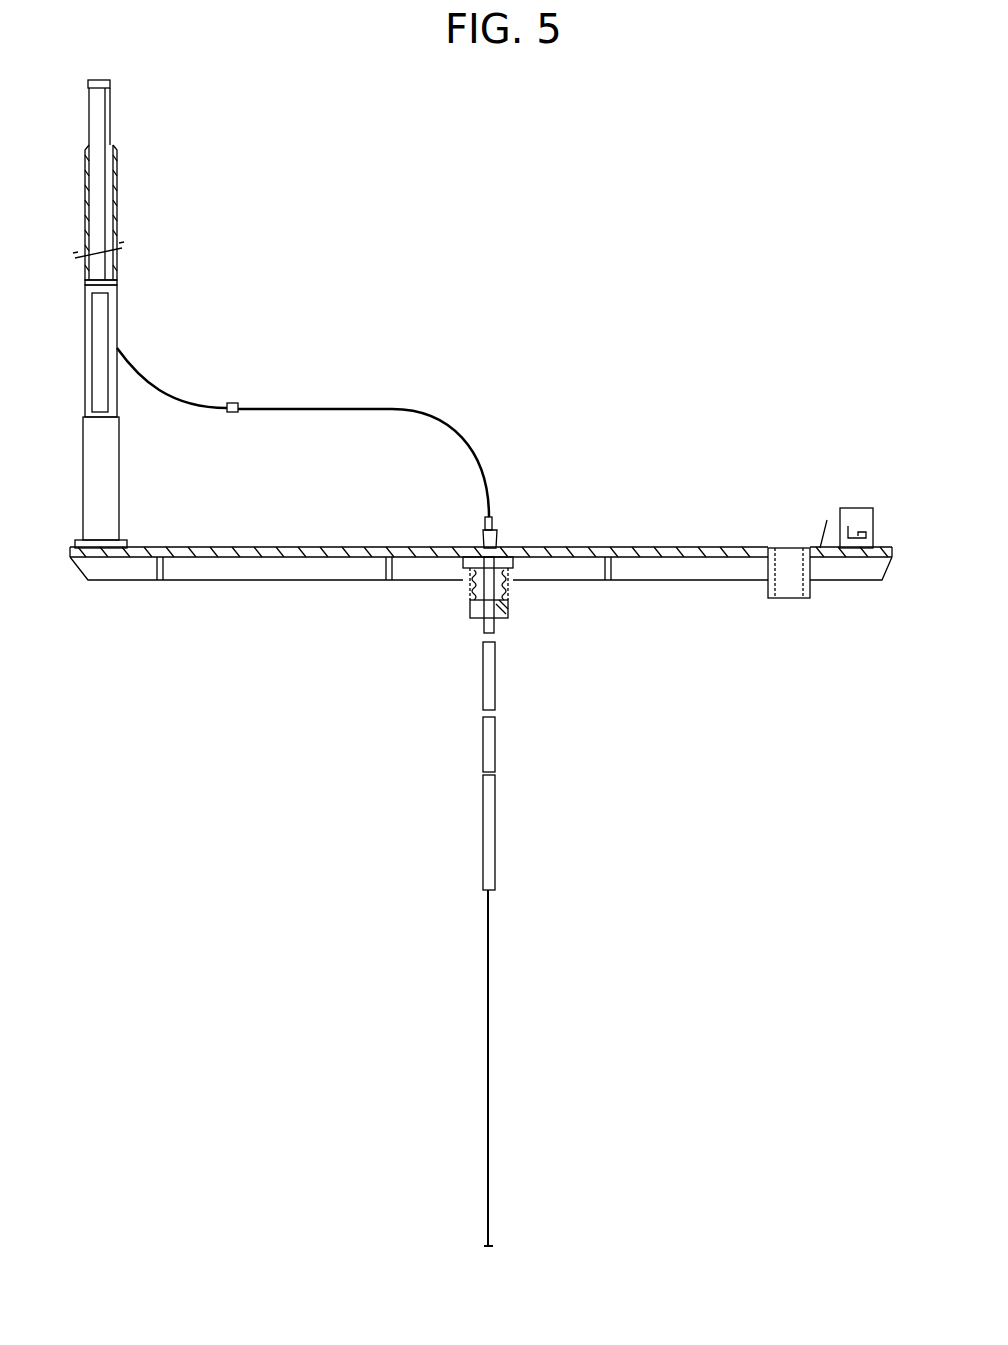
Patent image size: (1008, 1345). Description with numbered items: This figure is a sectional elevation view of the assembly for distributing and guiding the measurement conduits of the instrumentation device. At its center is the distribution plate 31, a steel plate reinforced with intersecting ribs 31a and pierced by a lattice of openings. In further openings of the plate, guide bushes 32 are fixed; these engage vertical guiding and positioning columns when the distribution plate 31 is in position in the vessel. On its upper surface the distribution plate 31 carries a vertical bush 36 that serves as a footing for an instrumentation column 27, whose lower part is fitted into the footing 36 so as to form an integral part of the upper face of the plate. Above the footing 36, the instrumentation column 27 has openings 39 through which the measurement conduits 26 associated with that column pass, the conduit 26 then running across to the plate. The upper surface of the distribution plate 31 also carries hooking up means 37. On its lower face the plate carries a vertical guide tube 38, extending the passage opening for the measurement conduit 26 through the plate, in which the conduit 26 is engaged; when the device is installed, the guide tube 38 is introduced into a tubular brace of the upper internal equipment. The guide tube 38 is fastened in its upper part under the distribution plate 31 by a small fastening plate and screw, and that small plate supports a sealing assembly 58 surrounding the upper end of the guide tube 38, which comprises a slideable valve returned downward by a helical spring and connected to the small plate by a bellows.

The measurement conduit 26 is at (317, 405).
The instrumentation column 27 is at (115, 175).
The distribution plate 31 is at (570, 548).
The intersecting ribs 31a is at (290, 567).
The guide bush 32 is at (765, 590).
The vertical bush 36 is at (105, 473).
The hooking up means 37 is at (857, 517).
The vertical guide tube 38 is at (495, 747).
The openings 39 is at (97, 343).
The sealing assembly 58 is at (505, 603).